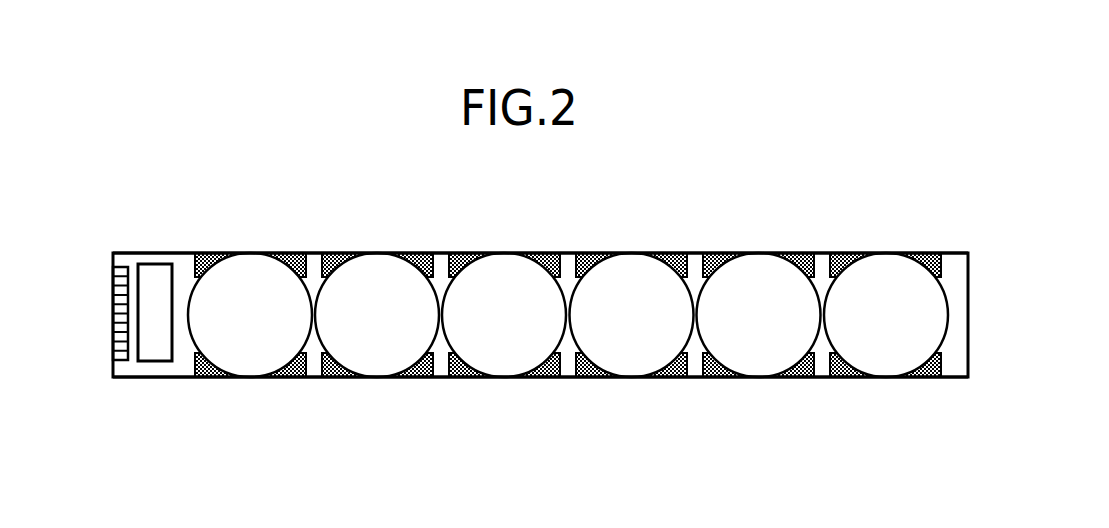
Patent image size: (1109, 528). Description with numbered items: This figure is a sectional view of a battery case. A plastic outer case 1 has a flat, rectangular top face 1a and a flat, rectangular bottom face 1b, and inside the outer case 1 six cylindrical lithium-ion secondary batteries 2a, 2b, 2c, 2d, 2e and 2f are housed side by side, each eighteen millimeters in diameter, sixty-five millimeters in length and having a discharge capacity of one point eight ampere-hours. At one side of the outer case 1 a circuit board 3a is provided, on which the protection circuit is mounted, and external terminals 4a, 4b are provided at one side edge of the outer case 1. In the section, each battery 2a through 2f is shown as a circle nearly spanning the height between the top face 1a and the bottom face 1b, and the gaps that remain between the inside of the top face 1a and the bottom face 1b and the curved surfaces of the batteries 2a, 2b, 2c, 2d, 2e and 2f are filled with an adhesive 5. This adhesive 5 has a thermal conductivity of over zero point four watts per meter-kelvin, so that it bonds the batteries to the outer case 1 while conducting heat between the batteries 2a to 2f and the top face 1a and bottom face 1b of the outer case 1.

The outer case 1 is at (540, 329).
The top face 1a is at (414, 252).
The bottom face 1b is at (457, 377).
The lithium-ion secondary battery 2a is at (236, 357).
The lithium-ion secondary battery 2b is at (374, 357).
The lithium-ion secondary battery 2c is at (508, 357).
The lithium-ion secondary battery 2d is at (630, 355).
The lithium-ion secondary battery 2e is at (753, 355).
The lithium-ion secondary battery 2f is at (888, 355).
The circuit board 3a is at (154, 263).
The external terminal 4a is at (110, 355).
The external terminal 4b is at (113, 337).
The adhesive 5 is at (287, 262).